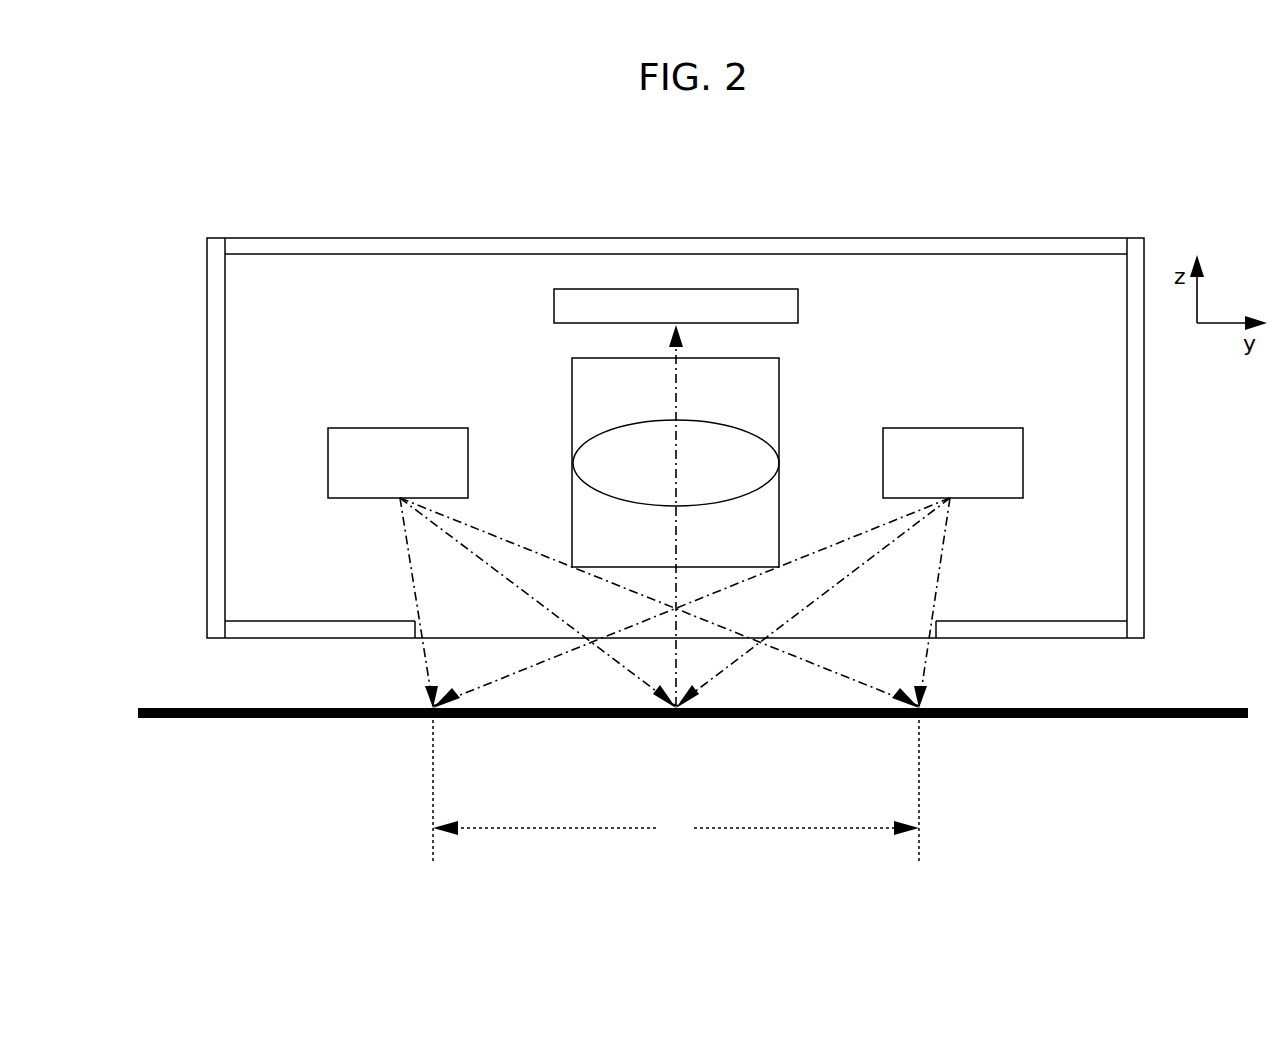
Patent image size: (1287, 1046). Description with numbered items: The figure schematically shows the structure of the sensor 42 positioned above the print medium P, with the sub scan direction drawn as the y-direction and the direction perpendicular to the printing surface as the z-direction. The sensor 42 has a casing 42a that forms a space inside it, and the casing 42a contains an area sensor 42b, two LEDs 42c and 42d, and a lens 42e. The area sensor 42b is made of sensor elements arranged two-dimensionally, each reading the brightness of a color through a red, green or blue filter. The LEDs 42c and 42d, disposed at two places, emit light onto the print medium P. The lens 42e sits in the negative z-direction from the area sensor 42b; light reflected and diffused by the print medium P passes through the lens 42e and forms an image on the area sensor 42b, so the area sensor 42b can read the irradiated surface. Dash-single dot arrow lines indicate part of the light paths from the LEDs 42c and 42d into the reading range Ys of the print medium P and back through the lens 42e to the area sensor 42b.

The sensor 42 is at (190, 252).
The casing 42a is at (1144, 437).
The area sensor 42b is at (554, 302).
The LED 42c is at (397, 427).
The LED 42d is at (950, 427).
The lens 42e is at (571, 400).
The print medium P is at (262, 708).
The reading range Ys is at (676, 791).